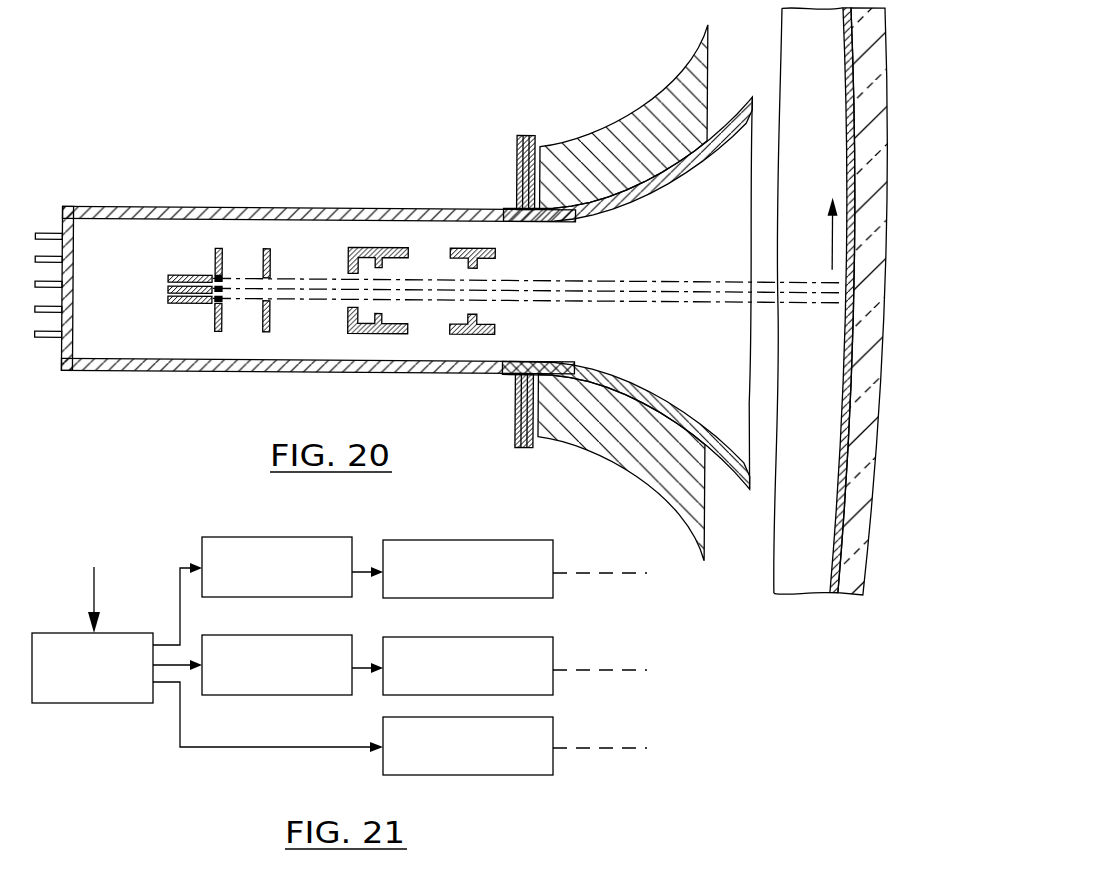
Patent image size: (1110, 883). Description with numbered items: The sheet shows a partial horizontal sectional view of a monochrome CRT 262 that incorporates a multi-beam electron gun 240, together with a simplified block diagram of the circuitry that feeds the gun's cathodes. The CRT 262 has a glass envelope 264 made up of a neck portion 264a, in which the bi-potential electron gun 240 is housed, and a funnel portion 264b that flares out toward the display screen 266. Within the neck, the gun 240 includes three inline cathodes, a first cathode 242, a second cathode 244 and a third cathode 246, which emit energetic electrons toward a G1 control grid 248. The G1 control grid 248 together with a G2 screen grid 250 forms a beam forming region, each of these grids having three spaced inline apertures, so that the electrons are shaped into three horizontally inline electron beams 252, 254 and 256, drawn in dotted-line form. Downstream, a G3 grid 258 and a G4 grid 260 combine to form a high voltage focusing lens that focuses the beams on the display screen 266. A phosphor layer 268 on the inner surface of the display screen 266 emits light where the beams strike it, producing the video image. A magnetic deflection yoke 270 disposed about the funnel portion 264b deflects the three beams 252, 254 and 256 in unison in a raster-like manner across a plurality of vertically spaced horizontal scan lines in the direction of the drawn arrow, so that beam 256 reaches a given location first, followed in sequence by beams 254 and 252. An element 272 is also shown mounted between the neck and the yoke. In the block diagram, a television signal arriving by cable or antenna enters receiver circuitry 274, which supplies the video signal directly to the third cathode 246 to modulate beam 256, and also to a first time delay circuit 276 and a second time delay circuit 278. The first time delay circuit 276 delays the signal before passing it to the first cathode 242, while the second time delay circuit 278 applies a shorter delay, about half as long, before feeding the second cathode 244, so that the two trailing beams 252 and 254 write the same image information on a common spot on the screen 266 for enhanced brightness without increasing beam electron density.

In FIG. 20, the multi-beam electron gun 240 is at (305, 355).
In FIG. 20, the first cathode 242 is at (168, 302).
In FIG. 21, the first cathode 242 is at (548, 595).
In FIG. 20, the second cathode 244 is at (168, 290).
In FIG. 21, the second cathode 244 is at (548, 693).
In FIG. 20, the third cathode 246 is at (168, 279).
In FIG. 21, the third cathode 246 is at (548, 772).
In FIG. 20, the G1 control grid 248 is at (214, 250).
In FIG. 20, the G2 screen grid 250 is at (266, 250).
In FIG. 20, the first electron beam 252 is at (548, 303).
In FIG. 21, the first electron beam 252 is at (583, 573).
In FIG. 20, the second electron beam 254 is at (648, 301).
In FIG. 21, the second electron beam 254 is at (583, 670).
In FIG. 20, the third electron beam 256 is at (622, 278).
In FIG. 21, the third electron beam 256 is at (583, 748).
In FIG. 20, the G3 grid 258 is at (368, 248).
In FIG. 20, the G4 grid 260 is at (486, 247).
In FIG. 20, the monochrome CRT 262 is at (453, 162).
In FIG. 20, the glass envelope 264 is at (405, 207).
In FIG. 20, the neck portion 264a is at (232, 207).
In FIG. 20, the funnel portion 264b is at (736, 109).
In FIG. 20, the display screen 266 is at (852, 590).
In FIG. 20, the phosphor layer 268 is at (812, 582).
In FIG. 20, the magnetic deflection yoke 270 is at (646, 104).
In FIG. 20, the mounting ring 272 is at (524, 133).
In FIG. 21, the receiver circuitry 274 is at (148, 700).
In FIG. 21, the first time delay circuit 276 is at (345, 595).
In FIG. 21, the second time delay circuit 278 is at (346, 693).